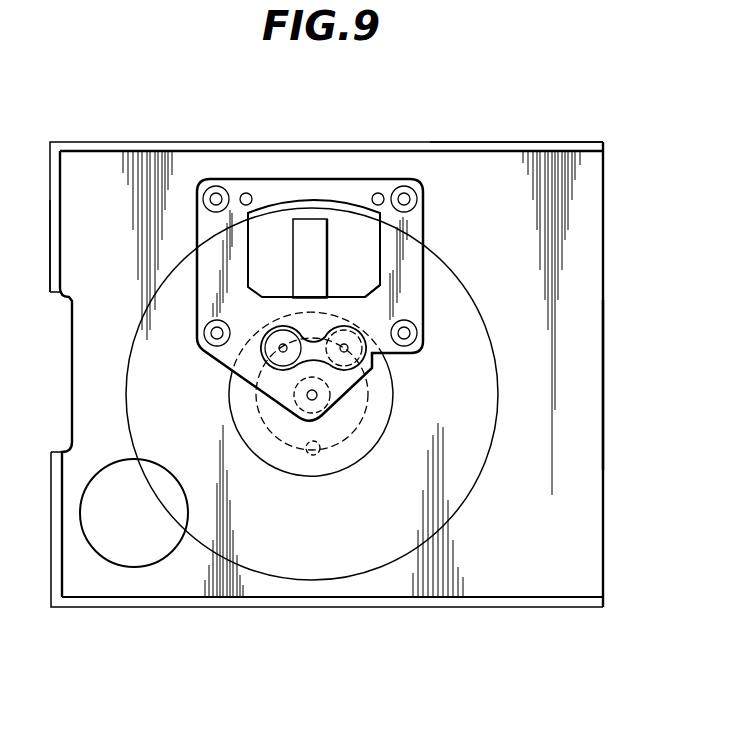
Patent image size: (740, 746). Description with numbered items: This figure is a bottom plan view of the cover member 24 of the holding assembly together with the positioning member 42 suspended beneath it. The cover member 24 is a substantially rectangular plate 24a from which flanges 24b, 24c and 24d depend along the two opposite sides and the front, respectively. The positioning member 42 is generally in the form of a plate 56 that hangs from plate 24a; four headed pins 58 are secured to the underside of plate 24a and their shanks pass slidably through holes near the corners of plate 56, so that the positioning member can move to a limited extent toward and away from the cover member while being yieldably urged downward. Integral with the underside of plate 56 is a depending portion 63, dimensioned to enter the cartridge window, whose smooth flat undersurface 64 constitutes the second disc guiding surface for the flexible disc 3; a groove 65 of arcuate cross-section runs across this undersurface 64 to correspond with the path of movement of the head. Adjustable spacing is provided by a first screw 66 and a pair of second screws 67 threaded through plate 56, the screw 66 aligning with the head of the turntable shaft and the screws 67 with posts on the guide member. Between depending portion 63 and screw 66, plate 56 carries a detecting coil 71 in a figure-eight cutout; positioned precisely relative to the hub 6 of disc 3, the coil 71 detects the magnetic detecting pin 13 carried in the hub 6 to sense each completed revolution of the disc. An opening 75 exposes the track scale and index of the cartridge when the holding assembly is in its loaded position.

The flexible disc 3 is at (333, 581).
The hub 6 is at (355, 466).
The magnetic detecting pin 13 is at (315, 456).
The cover member 24 is at (612, 286).
The plate 24a is at (571, 392).
The flange 24b is at (243, 607).
The flange 24c is at (505, 142).
The flange 24d is at (56, 242).
The positioning member 42 is at (433, 233).
The plate 56 is at (410, 290).
The headed pins 58 is at (216, 187).
The depending portion 63 is at (380, 257).
The undersurface 64 is at (357, 283).
The groove 65 is at (316, 236).
The first screw 66 is at (313, 395).
The second screws 67 is at (247, 193).
The detecting coil 71 is at (280, 352).
The opening 75 is at (126, 566).